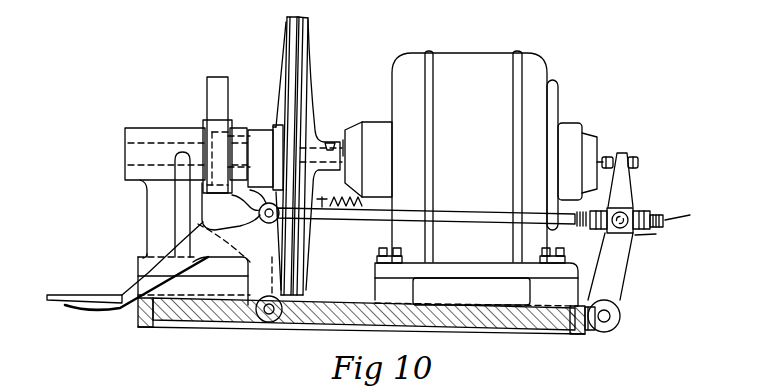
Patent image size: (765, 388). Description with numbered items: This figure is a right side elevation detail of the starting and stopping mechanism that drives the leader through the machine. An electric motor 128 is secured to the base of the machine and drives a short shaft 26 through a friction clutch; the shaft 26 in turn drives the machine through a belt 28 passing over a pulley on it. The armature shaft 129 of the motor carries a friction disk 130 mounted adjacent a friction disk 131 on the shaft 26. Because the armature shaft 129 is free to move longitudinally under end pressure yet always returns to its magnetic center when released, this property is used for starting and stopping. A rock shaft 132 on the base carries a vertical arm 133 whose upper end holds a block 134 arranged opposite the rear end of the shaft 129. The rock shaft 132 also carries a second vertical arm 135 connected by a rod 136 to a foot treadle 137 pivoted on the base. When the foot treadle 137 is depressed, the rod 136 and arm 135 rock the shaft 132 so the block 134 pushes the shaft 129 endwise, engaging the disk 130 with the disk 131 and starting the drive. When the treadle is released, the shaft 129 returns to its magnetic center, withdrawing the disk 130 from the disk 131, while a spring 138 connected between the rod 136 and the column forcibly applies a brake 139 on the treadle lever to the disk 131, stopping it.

The short shaft 26 is at (125, 155).
The belt 28 is at (207, 80).
The electric motor 128 is at (463, 62).
The armature shaft 129 is at (343, 147).
The friction disk 130 is at (309, 37).
The friction disk 131 is at (287, 25).
The rock shaft 132 is at (610, 316).
The vertical arm 133 is at (625, 193).
The block 134 is at (608, 160).
The second vertical arm 135 is at (617, 263).
The rod 136 is at (372, 212).
The foot treadle 137 is at (72, 298).
The spring 138 is at (338, 208).
The brake 139 is at (262, 178).